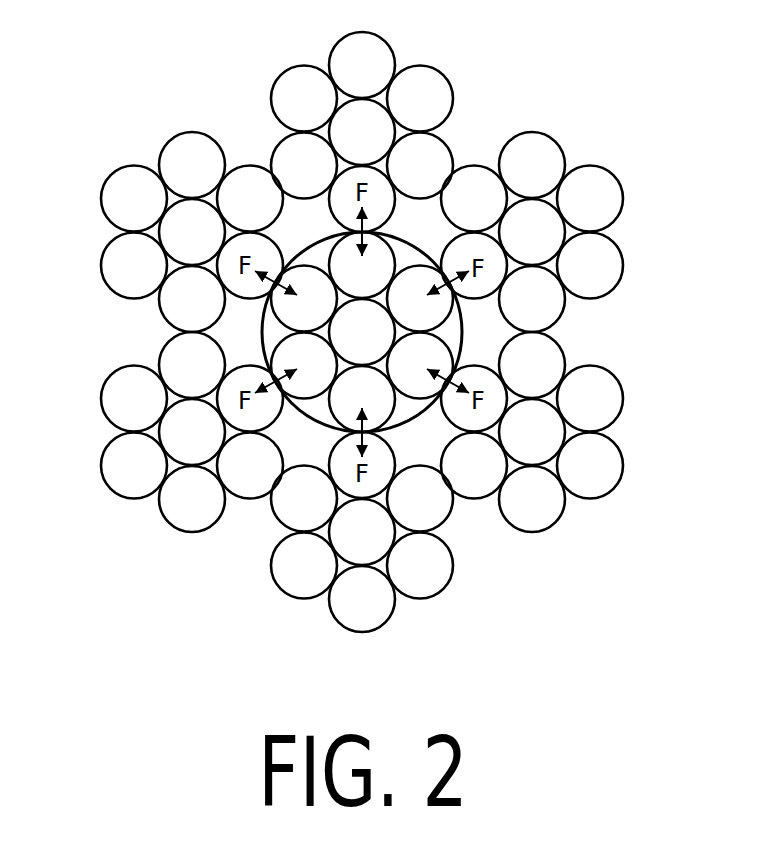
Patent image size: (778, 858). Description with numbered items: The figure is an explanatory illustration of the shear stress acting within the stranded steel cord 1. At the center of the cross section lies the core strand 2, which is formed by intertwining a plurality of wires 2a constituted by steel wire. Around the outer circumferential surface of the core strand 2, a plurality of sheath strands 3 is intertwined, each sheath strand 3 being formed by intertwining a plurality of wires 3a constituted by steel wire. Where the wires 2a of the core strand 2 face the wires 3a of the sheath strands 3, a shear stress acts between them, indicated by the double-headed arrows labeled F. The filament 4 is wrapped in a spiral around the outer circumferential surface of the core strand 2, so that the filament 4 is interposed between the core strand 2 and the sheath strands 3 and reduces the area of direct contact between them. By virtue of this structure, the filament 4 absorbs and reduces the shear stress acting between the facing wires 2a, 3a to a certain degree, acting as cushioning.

The steel cord 1 is at (354, 327).
The core strand 2 is at (349, 290).
The wires 2a is at (340, 323).
The sheath strands 3 is at (354, 327).
The wires 3a is at (198, 147).
The filament 4 is at (310, 247).